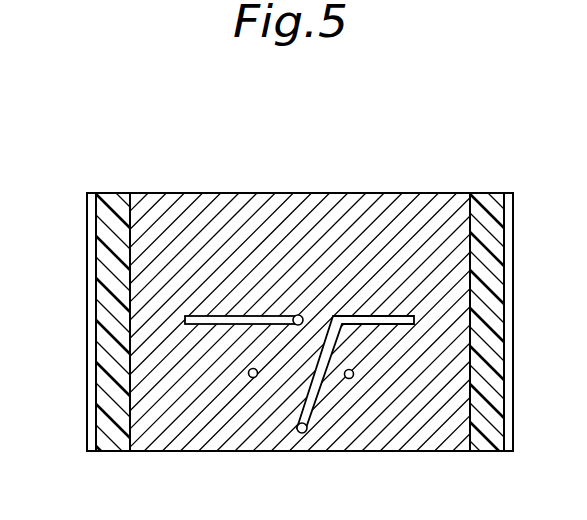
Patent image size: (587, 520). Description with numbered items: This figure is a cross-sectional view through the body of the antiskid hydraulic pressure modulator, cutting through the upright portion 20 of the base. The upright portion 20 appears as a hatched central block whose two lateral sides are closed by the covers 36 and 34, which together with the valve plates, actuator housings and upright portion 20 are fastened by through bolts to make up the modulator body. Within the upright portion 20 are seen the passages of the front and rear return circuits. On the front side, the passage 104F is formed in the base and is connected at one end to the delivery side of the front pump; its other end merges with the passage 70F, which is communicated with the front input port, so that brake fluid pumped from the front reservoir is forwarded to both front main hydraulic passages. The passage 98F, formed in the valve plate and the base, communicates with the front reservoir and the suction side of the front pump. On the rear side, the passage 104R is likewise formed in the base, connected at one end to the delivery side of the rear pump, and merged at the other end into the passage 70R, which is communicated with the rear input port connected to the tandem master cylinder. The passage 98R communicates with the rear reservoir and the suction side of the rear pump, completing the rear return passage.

The upright portion 20 is at (222, 200).
The cover 36 is at (105, 218).
The cover 34 is at (478, 212).
The passage 104F is at (196, 324).
The horizontal passage 70F is at (296, 325).
The passage 98F is at (252, 378).
The passage 104R is at (400, 324).
The passage 70R is at (303, 433).
The passage 98R is at (350, 379).